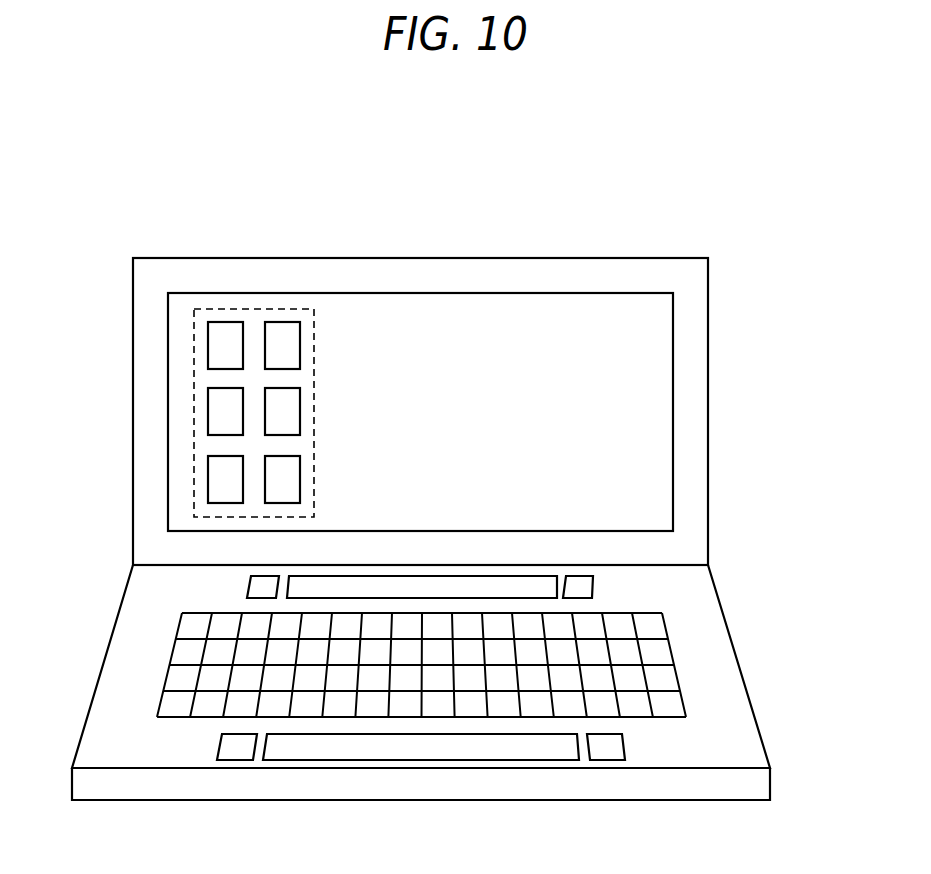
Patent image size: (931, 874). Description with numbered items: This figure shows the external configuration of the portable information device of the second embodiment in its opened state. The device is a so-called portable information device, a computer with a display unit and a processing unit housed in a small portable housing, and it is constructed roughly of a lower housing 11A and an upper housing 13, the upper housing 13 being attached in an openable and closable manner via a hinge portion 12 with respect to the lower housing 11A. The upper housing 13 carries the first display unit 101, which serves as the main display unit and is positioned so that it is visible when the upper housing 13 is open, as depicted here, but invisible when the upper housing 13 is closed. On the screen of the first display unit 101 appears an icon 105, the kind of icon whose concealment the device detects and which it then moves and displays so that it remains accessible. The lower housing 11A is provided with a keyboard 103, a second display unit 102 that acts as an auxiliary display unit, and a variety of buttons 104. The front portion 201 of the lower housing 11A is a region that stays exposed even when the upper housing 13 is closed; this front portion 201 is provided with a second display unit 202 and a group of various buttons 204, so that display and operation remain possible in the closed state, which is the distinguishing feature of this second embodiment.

The lower housing 11A is at (731, 673).
The hinge portion 12 is at (709, 565).
The upper housing 13 is at (708, 443).
The first display unit 101 is at (673, 333).
The second display unit 102 is at (327, 576).
The keyboard 103 is at (172, 718).
The buttons 104 is at (247, 587).
The concealed icon 105 is at (194, 365).
The front portion 201 is at (731, 761).
The second display unit 202 is at (418, 760).
The group of various buttons 204 is at (238, 760).